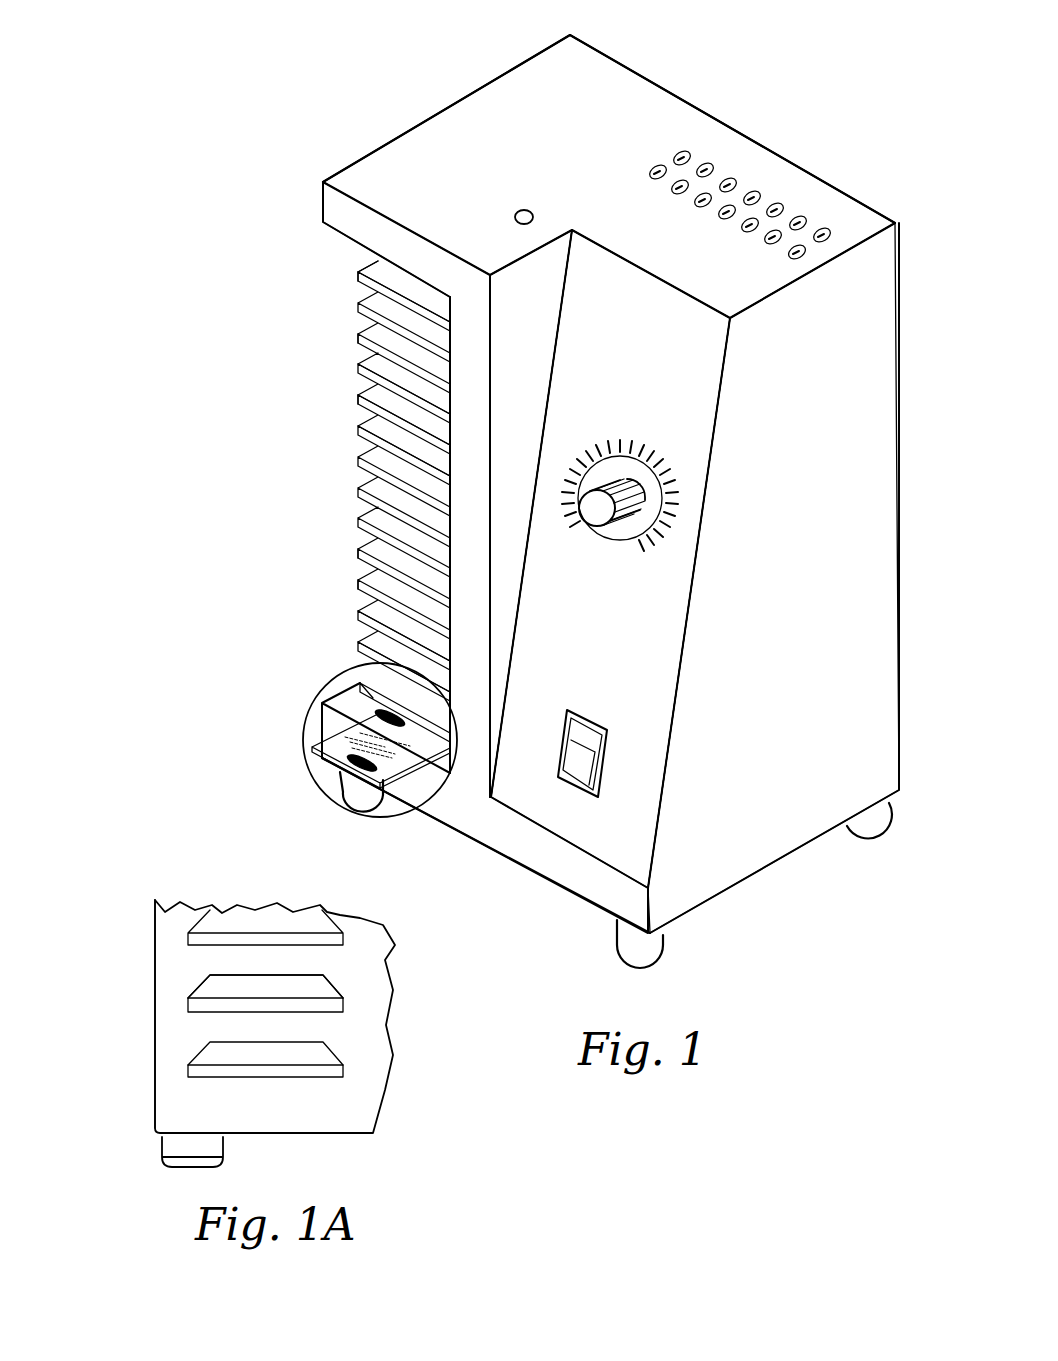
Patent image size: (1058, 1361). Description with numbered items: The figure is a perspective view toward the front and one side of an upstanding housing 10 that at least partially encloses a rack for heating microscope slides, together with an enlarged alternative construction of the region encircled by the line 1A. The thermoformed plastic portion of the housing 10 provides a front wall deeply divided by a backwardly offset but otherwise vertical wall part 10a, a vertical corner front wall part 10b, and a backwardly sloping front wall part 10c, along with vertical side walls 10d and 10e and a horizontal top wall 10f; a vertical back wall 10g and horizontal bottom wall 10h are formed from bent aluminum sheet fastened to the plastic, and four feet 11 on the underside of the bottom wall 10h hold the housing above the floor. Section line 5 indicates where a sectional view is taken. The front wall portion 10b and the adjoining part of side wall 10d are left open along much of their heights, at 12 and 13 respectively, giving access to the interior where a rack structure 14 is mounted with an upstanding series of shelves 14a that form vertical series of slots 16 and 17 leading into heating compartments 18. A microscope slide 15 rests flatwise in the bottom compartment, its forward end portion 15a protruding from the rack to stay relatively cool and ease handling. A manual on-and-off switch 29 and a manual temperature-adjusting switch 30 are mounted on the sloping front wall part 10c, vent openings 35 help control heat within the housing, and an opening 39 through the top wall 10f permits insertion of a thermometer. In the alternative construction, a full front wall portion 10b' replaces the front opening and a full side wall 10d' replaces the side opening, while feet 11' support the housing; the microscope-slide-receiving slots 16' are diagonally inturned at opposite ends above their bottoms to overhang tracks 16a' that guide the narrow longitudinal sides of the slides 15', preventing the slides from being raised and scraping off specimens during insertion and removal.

In FIG. 1, the housing 10 is at (640, 74).
In FIG. 1, the wall part 10a is at (531, 513).
In FIG. 1, the corner front wall part 10b is at (362, 493).
In FIG. 1, the front wall part 10c is at (610, 559).
In FIG. 1, the side wall 10d is at (446, 91).
In FIG. 1, the side wall 10e is at (773, 578).
In FIG. 1, the top wall 10f is at (609, 176).
In FIG. 1, the back wall 10g is at (843, 190).
In FIG. 1, the bottom wall 10h is at (560, 886).
In FIG. 1, the feet 11 is at (616, 870).
In FIG. 1, the opening 12 is at (347, 272).
In FIG. 1, the opening 13 is at (318, 254).
In FIG. 1, the rack structure 14 is at (350, 490).
In FIG. 1, the shelves 14a is at (357, 400).
In FIG. 1, the microscope slide 15 is at (354, 697).
In FIG. 1, the forward end portion 15a is at (338, 750).
In FIG. 1, the slots 16 is at (347, 639).
In FIG. 1, the slots 17 is at (360, 572).
In FIG. 1, the heating compartments 18 is at (420, 423).
In FIG. 1, the on-and-off switch 29 is at (585, 728).
In FIG. 1, the temperature-adjusting switch 30 is at (602, 515).
In FIG. 1, the vent openings 35 is at (730, 183).
In FIG. 1, the opening 39 is at (533, 215).
In FIG. 1, the section line 5 is at (279, 200).
In FIG. 1, the line 1A is at (338, 800).
In FIG. 1A, the full front wall portion 10b' is at (259, 1022).
In FIG. 1A, the full side wall 10d' is at (100, 1011).
In FIG. 1A, the foot 11' is at (234, 1162).
In FIG. 1A, the slides 15' is at (265, 1053).
In FIG. 1A, the microscope-slide-receiving slots 16' is at (323, 954).
In FIG. 1A, the tracks 16a' is at (261, 1007).